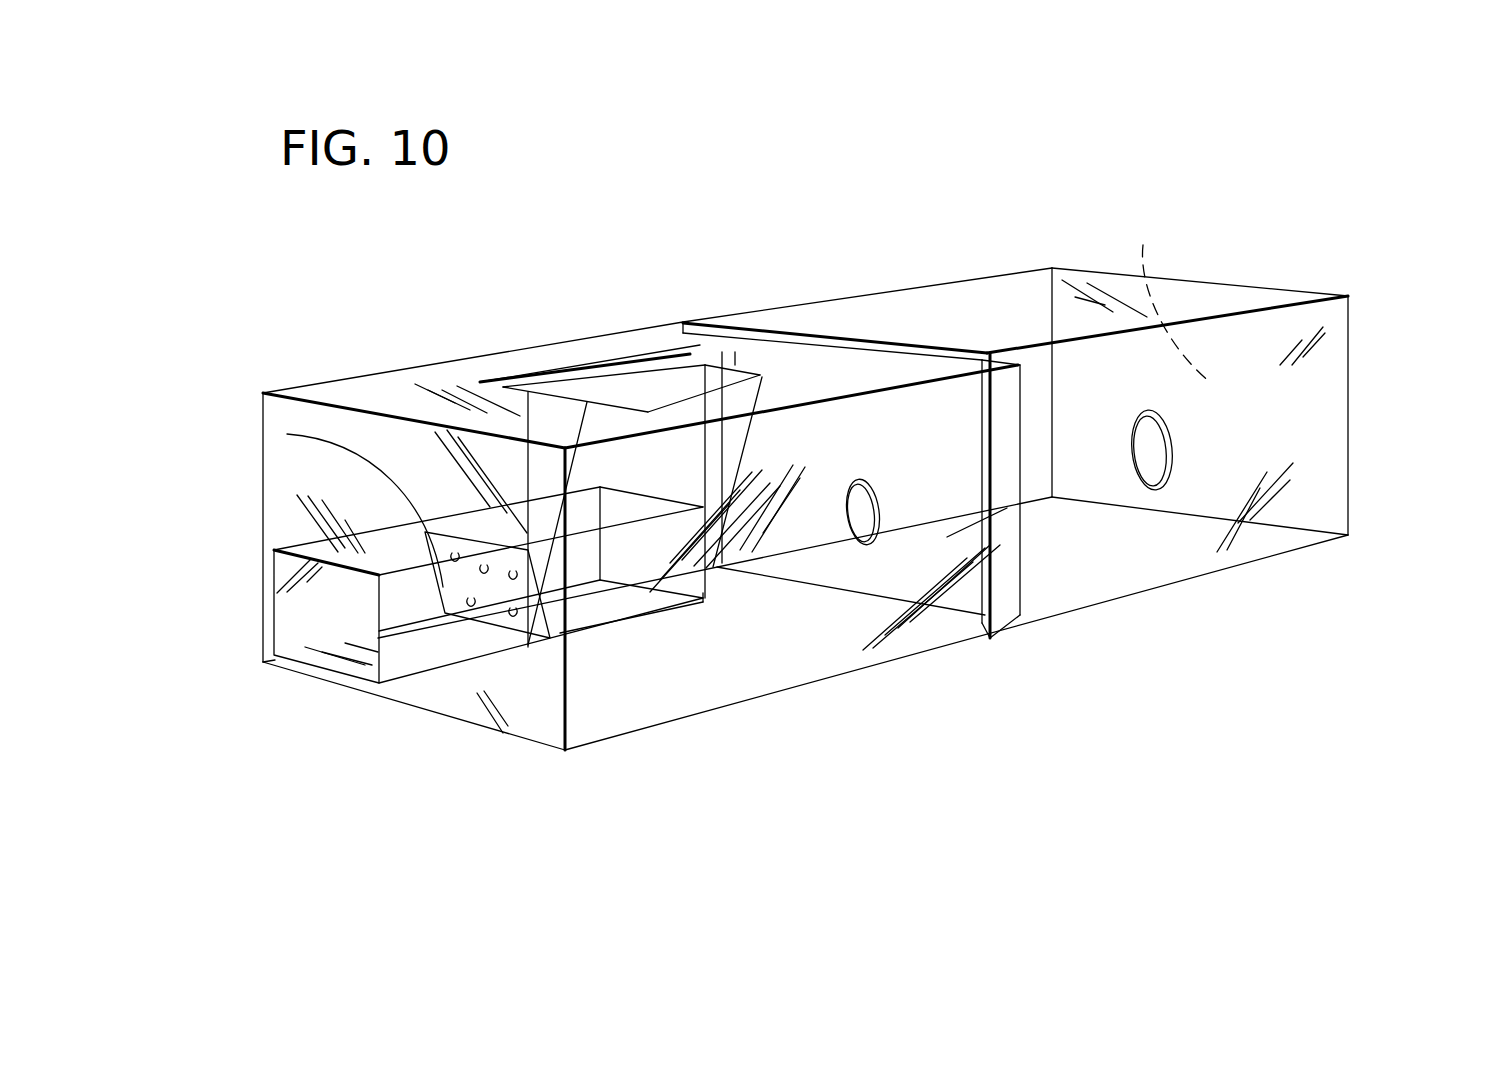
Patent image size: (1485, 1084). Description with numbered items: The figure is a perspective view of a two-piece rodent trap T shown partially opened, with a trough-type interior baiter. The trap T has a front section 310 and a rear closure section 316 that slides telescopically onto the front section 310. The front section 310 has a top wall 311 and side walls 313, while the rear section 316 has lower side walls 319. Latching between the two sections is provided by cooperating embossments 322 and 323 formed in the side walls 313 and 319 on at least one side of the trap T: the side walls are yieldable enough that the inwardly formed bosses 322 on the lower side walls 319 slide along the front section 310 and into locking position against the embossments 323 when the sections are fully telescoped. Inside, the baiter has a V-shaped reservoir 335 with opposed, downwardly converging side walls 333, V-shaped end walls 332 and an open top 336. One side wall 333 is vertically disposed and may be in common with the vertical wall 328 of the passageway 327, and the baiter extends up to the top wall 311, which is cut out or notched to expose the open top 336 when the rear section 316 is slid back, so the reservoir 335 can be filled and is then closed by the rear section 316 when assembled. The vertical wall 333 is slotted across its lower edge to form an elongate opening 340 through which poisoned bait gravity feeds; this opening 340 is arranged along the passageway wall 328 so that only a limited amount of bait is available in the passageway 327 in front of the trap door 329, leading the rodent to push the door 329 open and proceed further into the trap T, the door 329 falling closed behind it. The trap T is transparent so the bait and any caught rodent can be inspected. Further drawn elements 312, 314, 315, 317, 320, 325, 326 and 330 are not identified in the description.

The front section 310 is at (669, 330).
The top wall 311 is at (412, 385).
The bottom plate 312 is at (437, 697).
The side walls 313 is at (540, 405).
The end plate 314 is at (283, 490).
The partition plate 315 is at (860, 370).
The rear closure section 316 is at (1320, 283).
The top wall 317 is at (1232, 296).
The lower side walls 319 is at (1340, 517).
The light path 320 is at (1143, 245).
The embossments 322 is at (1158, 452).
The embossments 323 is at (862, 517).
The air flow arrow 325 is at (342, 613).
The inlet channel 326 is at (266, 613).
The passageway 327 is at (303, 591).
The vertical wall 328 is at (396, 545).
The trap door 329 is at (492, 617).
The perforated tray 330 is at (513, 610).
The V-shaped end walls 332 is at (538, 418).
The side walls 333 is at (717, 565).
The V-shaped reservoir 335 is at (648, 378).
The open top 336 is at (734, 360).
The elongate opening 340 is at (655, 603).
The trap T is at (853, 241).